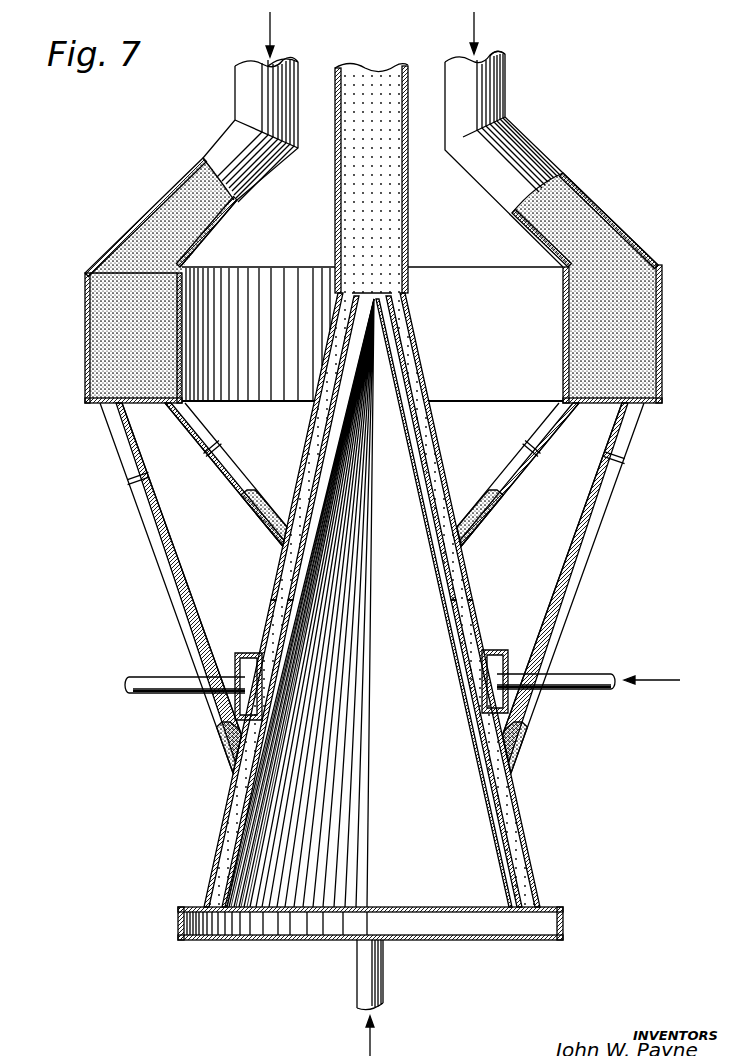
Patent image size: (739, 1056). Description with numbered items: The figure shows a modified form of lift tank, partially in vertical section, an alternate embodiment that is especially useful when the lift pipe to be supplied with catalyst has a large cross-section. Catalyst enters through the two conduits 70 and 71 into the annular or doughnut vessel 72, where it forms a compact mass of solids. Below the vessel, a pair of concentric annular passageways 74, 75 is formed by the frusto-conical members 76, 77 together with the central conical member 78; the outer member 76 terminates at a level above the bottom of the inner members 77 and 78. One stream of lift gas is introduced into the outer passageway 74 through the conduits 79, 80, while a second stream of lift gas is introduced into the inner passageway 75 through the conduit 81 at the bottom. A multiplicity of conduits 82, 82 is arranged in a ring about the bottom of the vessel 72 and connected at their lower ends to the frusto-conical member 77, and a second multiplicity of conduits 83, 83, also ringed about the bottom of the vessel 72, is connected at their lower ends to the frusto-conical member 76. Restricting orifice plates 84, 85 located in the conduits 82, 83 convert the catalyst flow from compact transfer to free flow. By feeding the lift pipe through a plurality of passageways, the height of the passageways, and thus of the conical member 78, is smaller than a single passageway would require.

The conduit 70 is at (216, 146).
The conduit 71 is at (530, 133).
The annular vessel 72 is at (663, 297).
The outer annular passageway 74 is at (437, 453).
The inner annular passageway 75 is at (428, 478).
The outer frusto-conical member 76 is at (480, 598).
The inner frusto-conical member 77 is at (460, 590).
The central conical member 78 is at (460, 657).
The lift gas conduit 79 is at (597, 668).
The lift gas conduit 80 is at (152, 697).
The lift gas conduit 81 is at (383, 963).
The catalyst conduit 82 is at (153, 555).
The catalyst conduit 83 is at (240, 469).
The restricting orifice plate 84 is at (143, 478).
The restricting orifice plate 85 is at (212, 436).